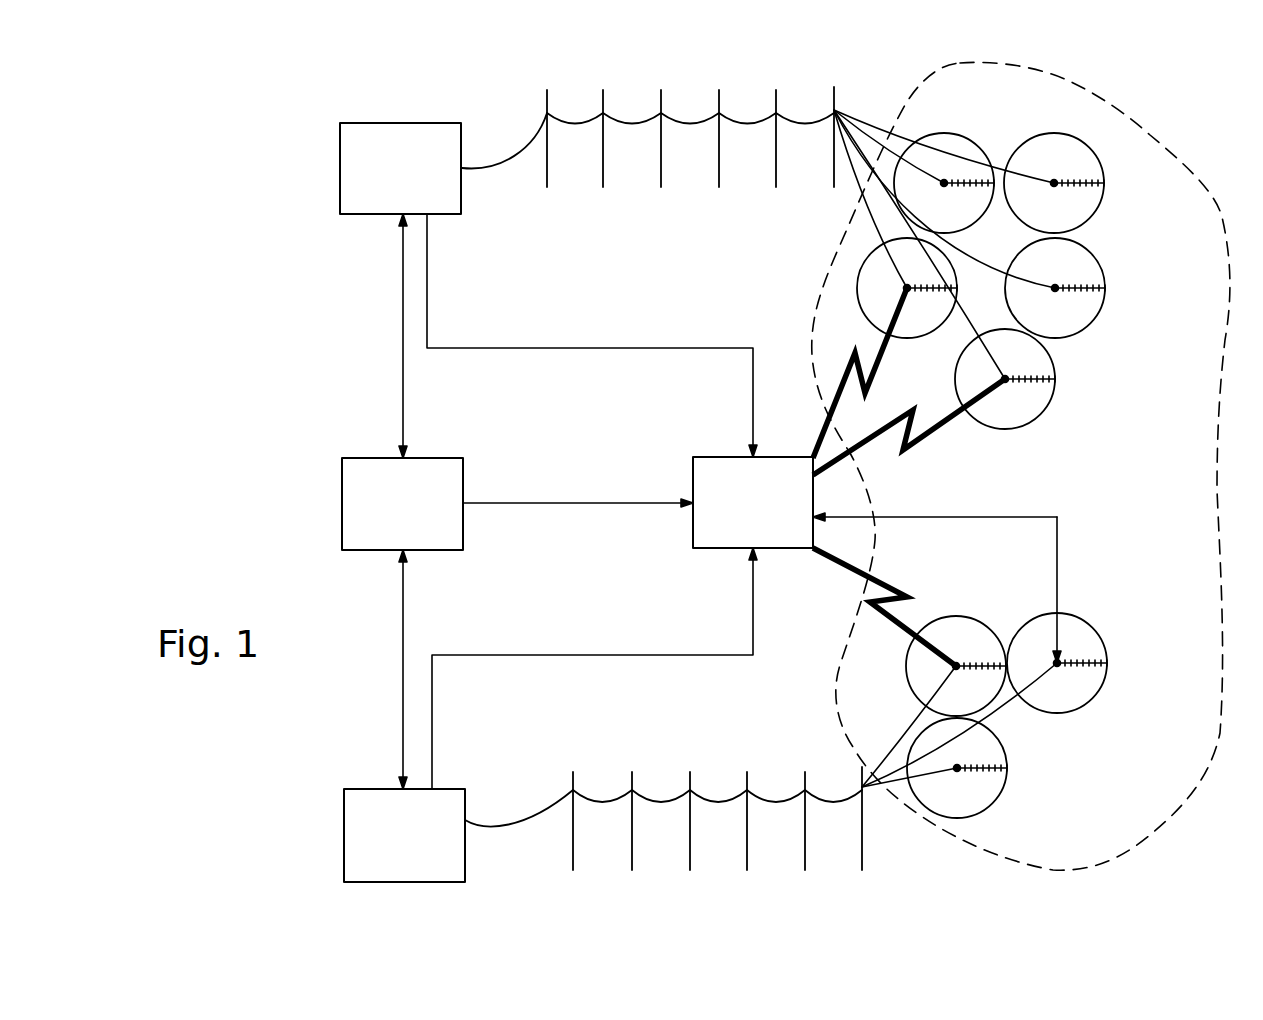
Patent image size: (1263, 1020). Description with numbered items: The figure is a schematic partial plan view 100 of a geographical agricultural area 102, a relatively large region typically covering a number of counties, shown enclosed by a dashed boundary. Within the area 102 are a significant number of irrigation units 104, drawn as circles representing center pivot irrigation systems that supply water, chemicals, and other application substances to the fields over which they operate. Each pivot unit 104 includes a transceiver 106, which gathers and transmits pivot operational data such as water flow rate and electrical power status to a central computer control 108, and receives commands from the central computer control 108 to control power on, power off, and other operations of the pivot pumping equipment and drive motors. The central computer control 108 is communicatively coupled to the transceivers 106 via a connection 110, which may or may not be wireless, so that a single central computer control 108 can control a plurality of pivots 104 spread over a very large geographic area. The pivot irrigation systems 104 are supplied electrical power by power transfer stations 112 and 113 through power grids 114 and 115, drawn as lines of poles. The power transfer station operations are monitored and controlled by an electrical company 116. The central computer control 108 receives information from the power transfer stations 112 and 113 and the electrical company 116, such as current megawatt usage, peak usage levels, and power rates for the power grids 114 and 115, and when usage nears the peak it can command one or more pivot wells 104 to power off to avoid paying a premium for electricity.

The partial plan view 100 is at (233, 300).
The geographical agricultural area 102 is at (1140, 127).
The irrigation unit 104 is at (940, 133).
The transceiver 106 is at (1054, 183).
The central computer control 108 is at (693, 458).
The connection 110 is at (850, 350).
The power transfer station 112 is at (340, 168).
The power transfer station 113 is at (344, 789).
The power grid 114 is at (617, 215).
The power grid 115 is at (643, 750).
The electrical company 116 is at (342, 505).